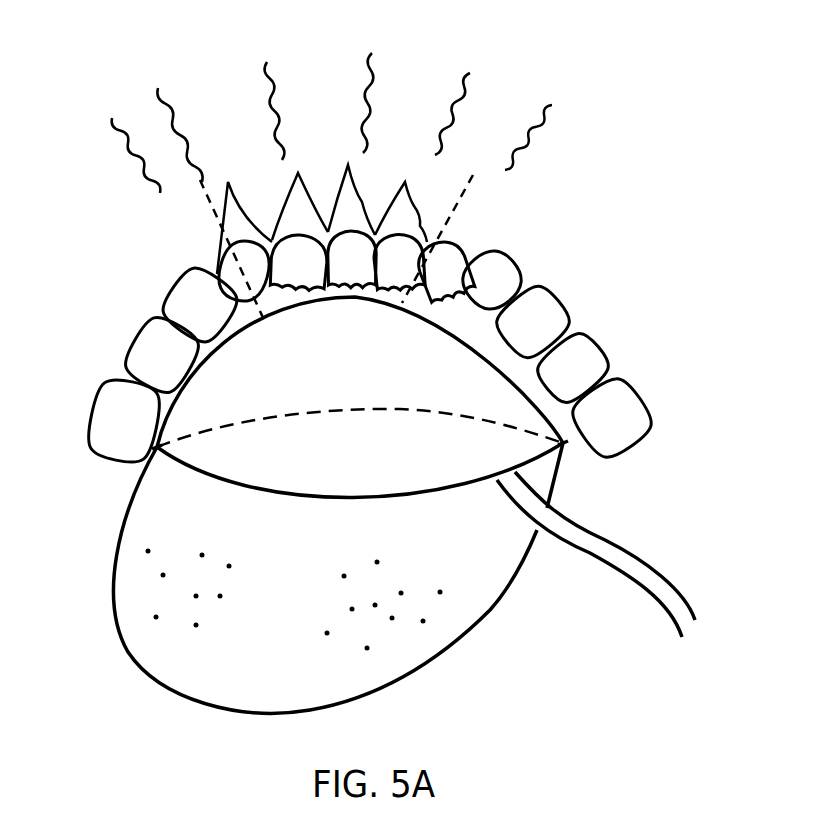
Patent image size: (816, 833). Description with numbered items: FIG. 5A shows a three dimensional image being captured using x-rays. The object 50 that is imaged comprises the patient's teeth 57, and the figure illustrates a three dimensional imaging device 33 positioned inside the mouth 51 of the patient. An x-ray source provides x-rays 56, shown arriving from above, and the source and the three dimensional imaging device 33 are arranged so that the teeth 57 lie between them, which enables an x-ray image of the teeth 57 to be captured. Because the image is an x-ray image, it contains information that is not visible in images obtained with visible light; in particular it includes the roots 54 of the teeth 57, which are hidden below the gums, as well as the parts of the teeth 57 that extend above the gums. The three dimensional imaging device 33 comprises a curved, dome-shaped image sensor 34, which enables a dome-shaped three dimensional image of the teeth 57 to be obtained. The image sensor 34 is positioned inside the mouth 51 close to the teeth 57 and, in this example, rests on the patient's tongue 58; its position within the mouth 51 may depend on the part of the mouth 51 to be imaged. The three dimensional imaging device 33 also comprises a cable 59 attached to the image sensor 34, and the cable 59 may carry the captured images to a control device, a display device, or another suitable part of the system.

The three dimensional imaging device 33 is at (565, 443).
The image sensor 34 is at (160, 443).
The object 50 is at (157, 353).
The mouth 51 is at (533, 563).
The roots 54 is at (422, 200).
The x-rays 56 is at (188, 80).
The teeth 57 is at (544, 321).
The tongue 58 is at (227, 680).
The cable 59 is at (627, 547).